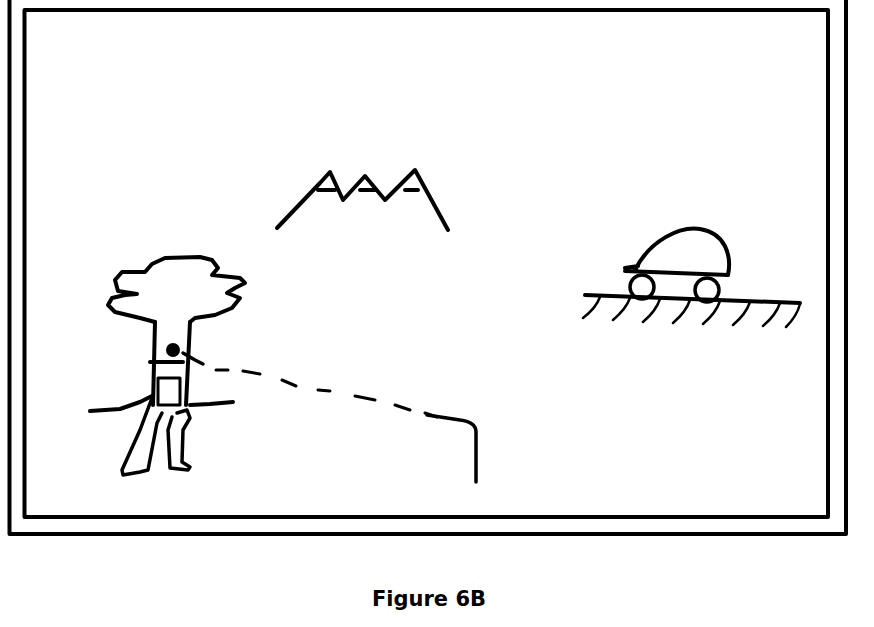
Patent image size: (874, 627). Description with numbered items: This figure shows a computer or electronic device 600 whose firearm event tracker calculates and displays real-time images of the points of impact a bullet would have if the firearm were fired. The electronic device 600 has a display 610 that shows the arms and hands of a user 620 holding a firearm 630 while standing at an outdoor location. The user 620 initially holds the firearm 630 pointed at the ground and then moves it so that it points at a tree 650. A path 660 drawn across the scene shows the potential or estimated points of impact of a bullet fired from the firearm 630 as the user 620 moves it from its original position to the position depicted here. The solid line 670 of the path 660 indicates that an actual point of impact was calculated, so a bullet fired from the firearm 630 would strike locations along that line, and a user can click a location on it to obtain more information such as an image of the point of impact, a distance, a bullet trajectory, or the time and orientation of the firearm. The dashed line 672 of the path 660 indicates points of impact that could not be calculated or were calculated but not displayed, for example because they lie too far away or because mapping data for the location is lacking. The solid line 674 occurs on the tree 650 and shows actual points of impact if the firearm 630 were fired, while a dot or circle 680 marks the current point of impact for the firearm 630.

The electronic device 600 is at (846, 80).
The display 610 is at (790, 70).
The user 620 is at (185, 456).
The firearm 630 is at (156, 392).
The tree 650 is at (244, 289).
The path 660 is at (456, 362).
The solid line 670 is at (480, 452).
The dashed line 672 is at (322, 391).
The solid line 674 is at (158, 360).
The dot or circle 680 is at (181, 348).